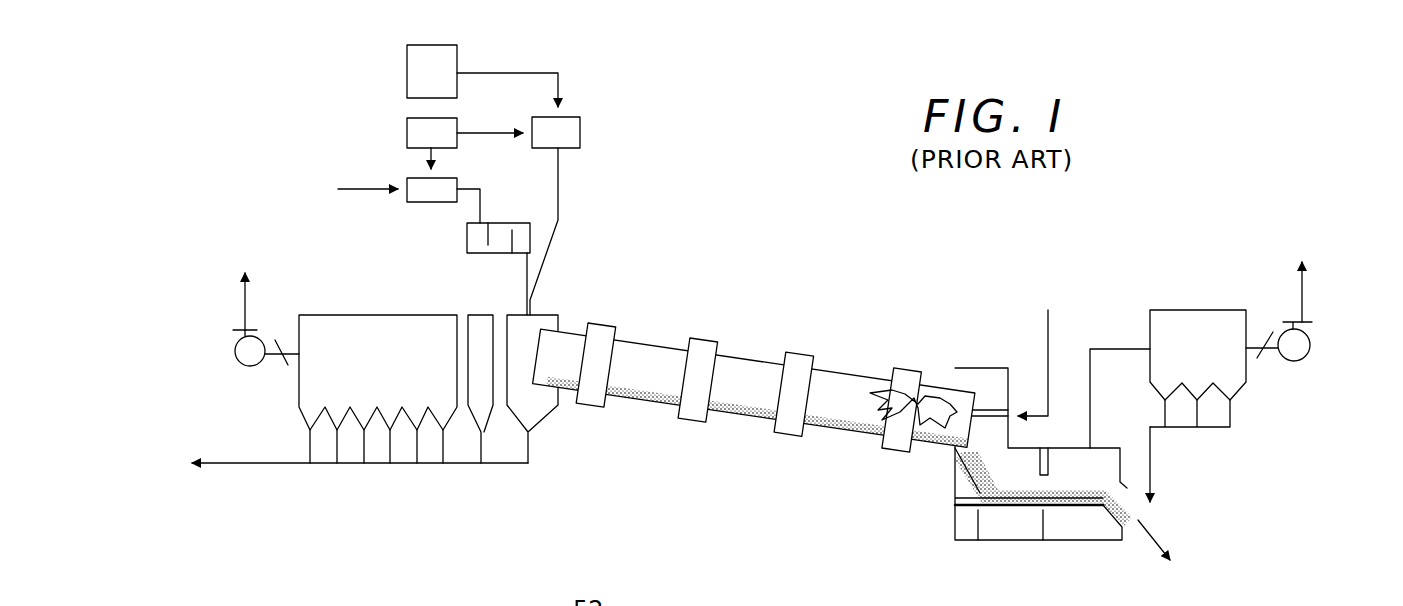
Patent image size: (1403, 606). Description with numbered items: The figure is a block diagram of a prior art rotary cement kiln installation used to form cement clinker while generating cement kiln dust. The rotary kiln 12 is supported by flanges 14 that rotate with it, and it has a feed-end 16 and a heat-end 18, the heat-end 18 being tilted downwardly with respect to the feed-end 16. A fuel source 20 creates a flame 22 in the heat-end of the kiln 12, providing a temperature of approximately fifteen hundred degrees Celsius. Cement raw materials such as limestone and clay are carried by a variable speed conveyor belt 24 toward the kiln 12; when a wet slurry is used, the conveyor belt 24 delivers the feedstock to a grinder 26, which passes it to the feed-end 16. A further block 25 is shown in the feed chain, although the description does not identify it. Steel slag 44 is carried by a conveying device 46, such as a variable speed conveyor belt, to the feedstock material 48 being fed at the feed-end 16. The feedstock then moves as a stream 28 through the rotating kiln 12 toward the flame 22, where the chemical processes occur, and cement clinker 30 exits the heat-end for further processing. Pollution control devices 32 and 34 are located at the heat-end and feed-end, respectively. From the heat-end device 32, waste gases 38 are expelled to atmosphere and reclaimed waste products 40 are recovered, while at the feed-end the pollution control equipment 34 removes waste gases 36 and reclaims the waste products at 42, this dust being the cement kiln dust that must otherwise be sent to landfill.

The rotary kiln 12 is at (741, 348).
The flanges 14 is at (707, 340).
The feed-end 16 is at (564, 342).
The heat-end 18 is at (935, 383).
The fuel source 20 is at (1048, 313).
The flame 22 is at (945, 420).
The variable speed conveyor belt 24 is at (357, 187).
The additive supply 25 is at (407, 130).
The grinder 26 is at (467, 233).
The stream 28 is at (653, 400).
The cement clinker 30 is at (1153, 543).
The pollution control device 32 is at (1197, 310).
The pollution control equipment 34 is at (513, 315).
The waste gases 36 is at (245, 298).
The waste gases 38 is at (1302, 285).
The reclaimed waste products 40 is at (1150, 471).
The reclaimed waste products 42 is at (293, 465).
The steel slag 44 is at (407, 72).
The conveying device 46 is at (572, 134).
The feedstock material 48 is at (555, 363).